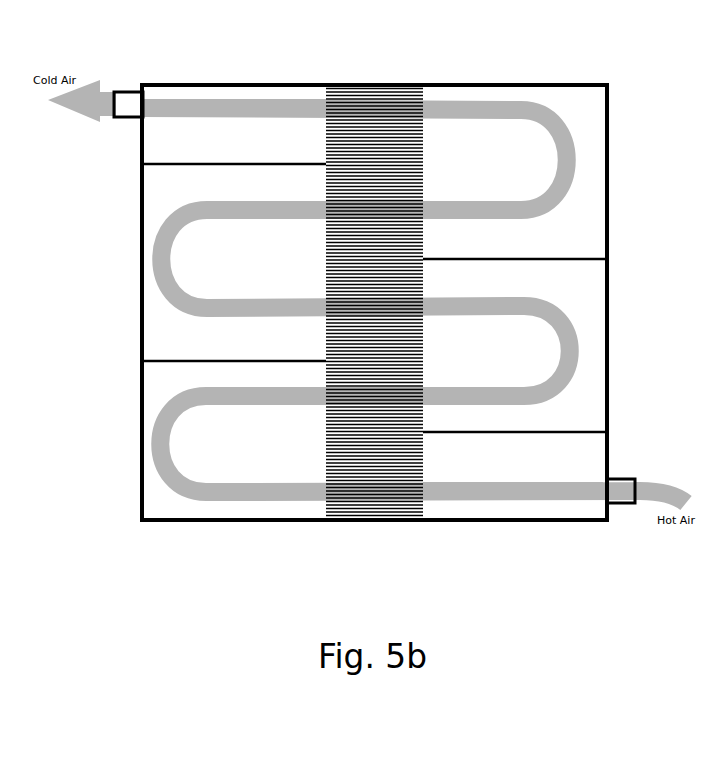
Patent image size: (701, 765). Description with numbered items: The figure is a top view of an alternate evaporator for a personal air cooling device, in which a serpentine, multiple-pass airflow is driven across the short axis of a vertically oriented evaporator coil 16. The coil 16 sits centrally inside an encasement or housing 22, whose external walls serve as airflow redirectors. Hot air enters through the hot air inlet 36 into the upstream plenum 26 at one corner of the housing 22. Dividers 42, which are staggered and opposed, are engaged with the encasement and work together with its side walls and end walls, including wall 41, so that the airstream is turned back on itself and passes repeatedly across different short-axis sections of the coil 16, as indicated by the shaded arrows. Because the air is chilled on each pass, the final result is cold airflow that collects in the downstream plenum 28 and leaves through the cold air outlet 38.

The evaporator coil 16 is at (369, 134).
The encasement or housing 22 is at (558, 82).
The upstream plenum 26 is at (513, 468).
The downstream plenum 28 is at (236, 129).
The hot air inlet 36 is at (629, 478).
The cold air outlet 38 is at (126, 90).
The housing wall 41 is at (610, 159).
The dividers 42 is at (213, 358).